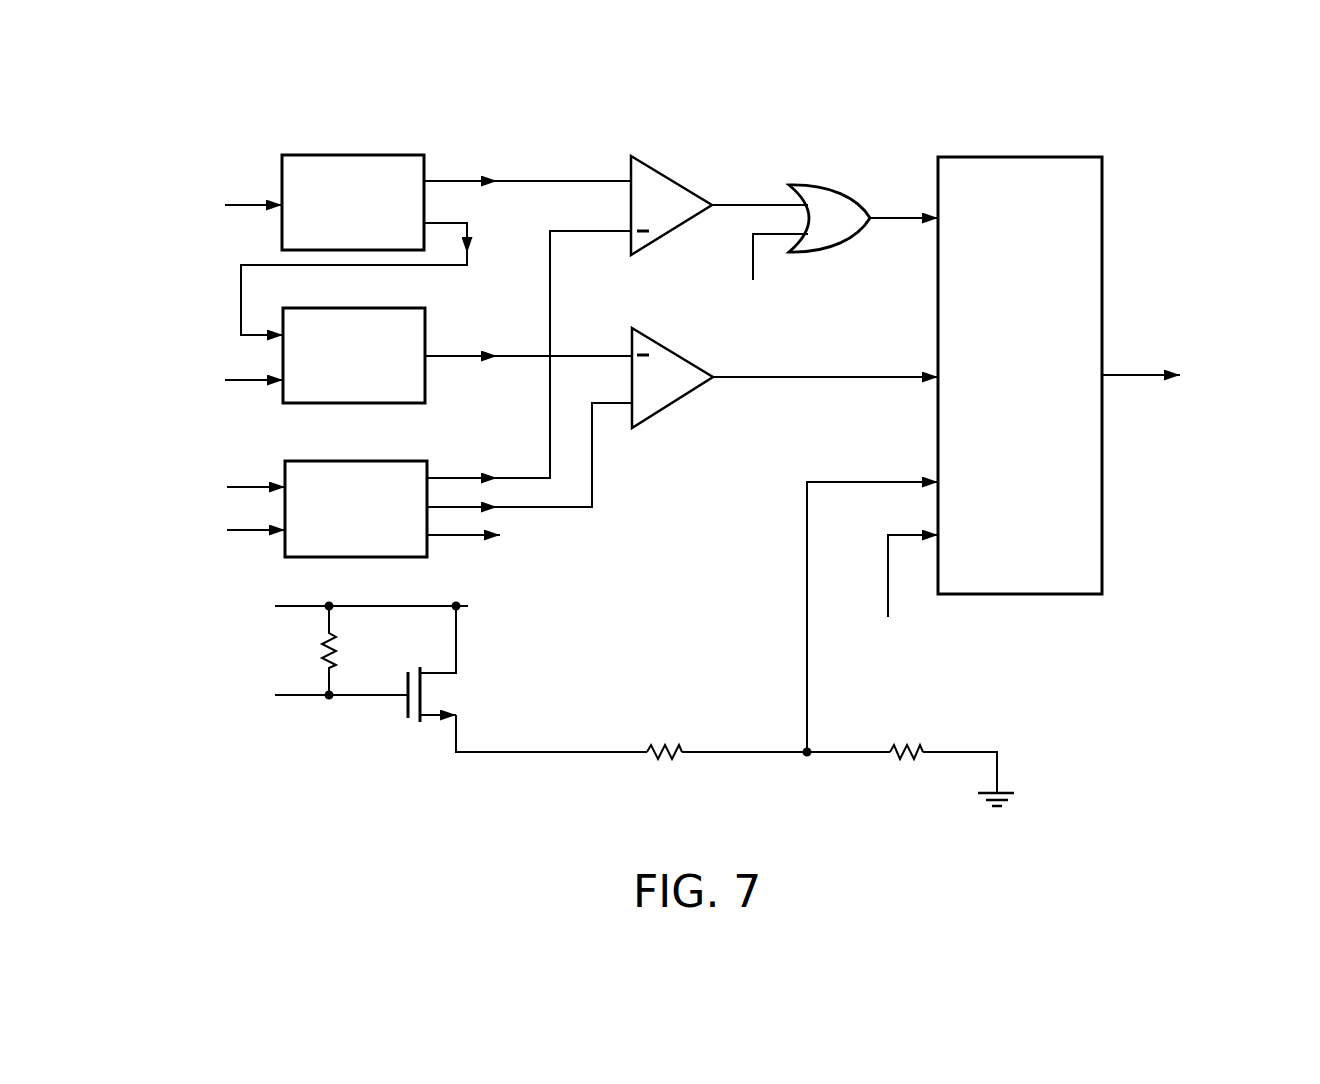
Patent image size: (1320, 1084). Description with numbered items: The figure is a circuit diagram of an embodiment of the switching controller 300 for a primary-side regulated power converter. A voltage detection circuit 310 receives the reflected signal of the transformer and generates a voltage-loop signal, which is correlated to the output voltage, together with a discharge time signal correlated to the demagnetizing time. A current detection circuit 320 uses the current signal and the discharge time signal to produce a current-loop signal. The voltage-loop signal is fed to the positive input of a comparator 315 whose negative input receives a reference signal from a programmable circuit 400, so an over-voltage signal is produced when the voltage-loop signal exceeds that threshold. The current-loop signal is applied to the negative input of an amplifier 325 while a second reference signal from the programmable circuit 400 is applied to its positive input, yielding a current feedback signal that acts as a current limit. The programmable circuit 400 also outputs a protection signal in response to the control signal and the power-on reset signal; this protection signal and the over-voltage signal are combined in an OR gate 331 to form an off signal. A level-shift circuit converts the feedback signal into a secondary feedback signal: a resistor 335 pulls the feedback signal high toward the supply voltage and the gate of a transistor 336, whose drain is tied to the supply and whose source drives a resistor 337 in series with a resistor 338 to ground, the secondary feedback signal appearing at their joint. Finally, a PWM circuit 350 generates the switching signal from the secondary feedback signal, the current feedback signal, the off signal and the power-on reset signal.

The switching controller 300 is at (1270, 128).
The voltage detection circuit 310 is at (353, 187).
The current detection circuit 320 is at (354, 337).
The programmable circuit 400 is at (356, 494).
The PWM circuit 350 is at (1020, 359).
The comparator 315 is at (674, 201).
The amplifier 325 is at (675, 375).
The OR gate 331 is at (829, 201).
The resistor 335 is at (357, 650).
The transistor 336 is at (527, 679).
The resistor 337 is at (666, 735).
The resistor 338 is at (909, 735).